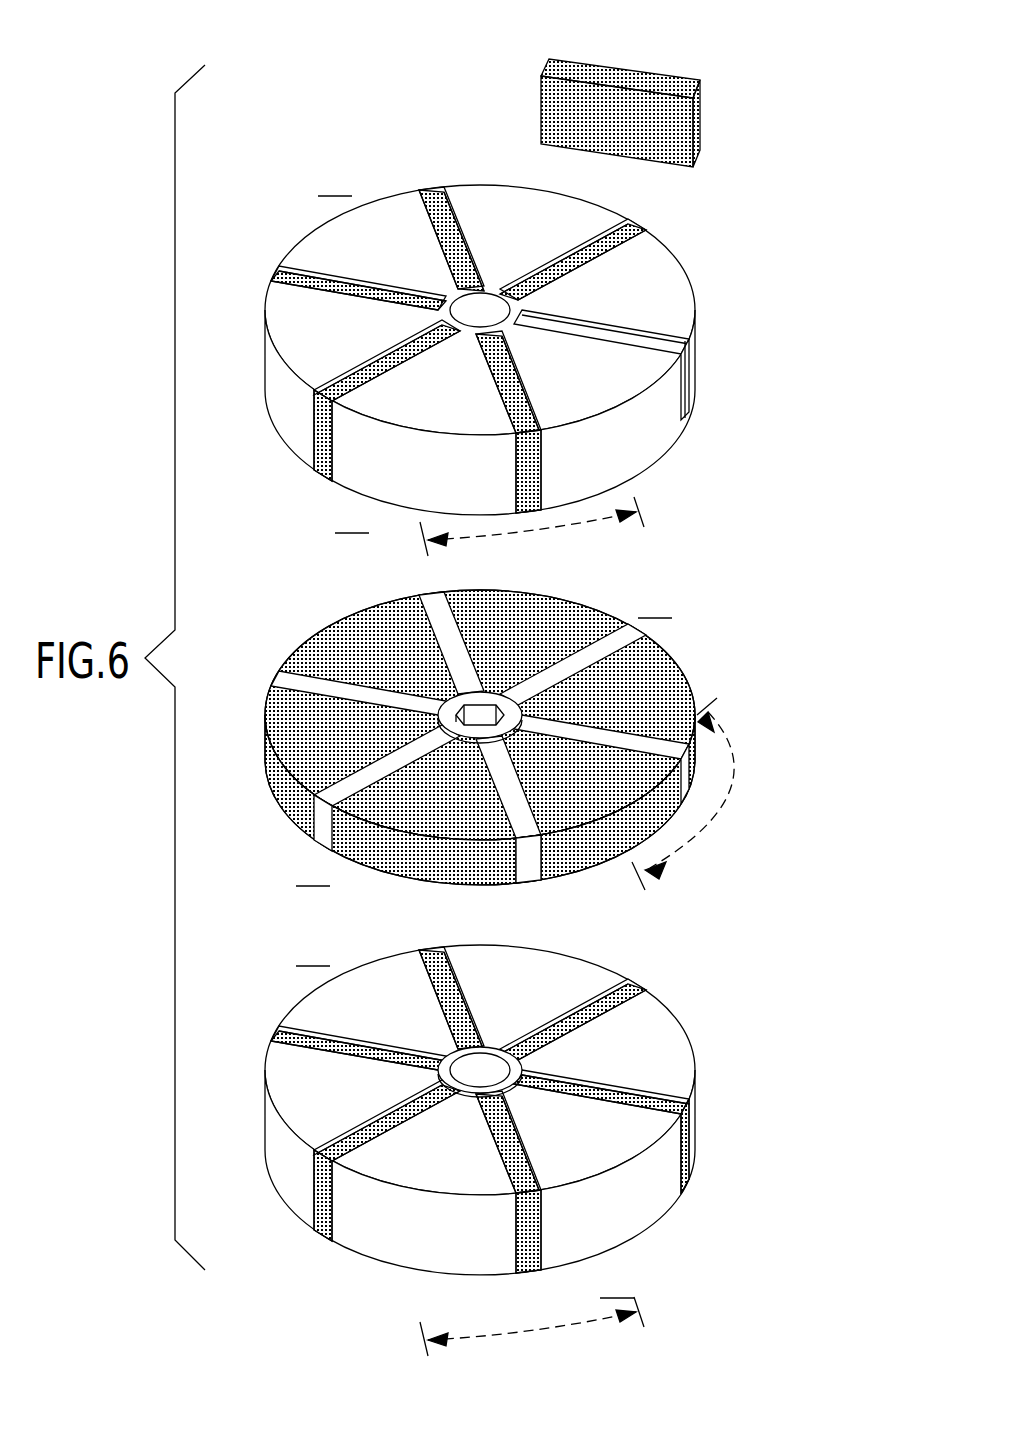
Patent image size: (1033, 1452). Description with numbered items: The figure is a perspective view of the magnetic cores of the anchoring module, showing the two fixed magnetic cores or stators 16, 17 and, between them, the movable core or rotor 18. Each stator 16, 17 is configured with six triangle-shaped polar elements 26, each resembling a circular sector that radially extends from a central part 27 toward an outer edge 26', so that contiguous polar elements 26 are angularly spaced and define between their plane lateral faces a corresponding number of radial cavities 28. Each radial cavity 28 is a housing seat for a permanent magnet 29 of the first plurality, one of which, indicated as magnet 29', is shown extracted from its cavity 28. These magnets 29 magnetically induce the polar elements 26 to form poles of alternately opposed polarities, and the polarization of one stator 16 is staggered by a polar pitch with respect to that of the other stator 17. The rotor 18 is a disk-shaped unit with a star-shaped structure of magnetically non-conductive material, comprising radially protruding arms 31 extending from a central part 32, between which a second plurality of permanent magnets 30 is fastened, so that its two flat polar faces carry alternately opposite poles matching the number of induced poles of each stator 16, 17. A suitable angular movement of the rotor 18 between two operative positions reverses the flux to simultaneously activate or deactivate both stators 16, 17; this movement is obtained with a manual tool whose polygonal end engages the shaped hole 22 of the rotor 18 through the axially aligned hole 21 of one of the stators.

The fixed magnetic core (stator) 16 is at (258, 264).
The fixed magnetic core (stator) 17 is at (270, 1250).
The movable core (rotor) 18 is at (272, 632).
The axially aligned hole 21 is at (468, 303).
The shaped hole 22 is at (480, 707).
The polar element 26 is at (531, 716).
The outer edge 26' is at (502, 827).
The central part 27 is at (565, 268).
The radial cavity 28 is at (675, 338).
The permanent magnet 29 is at (496, 676).
The permanent magnet (extracted) 29' is at (630, 83).
The permanent magnet 30 is at (668, 678).
The arm 31 is at (524, 822).
The central part 32 is at (440, 712).